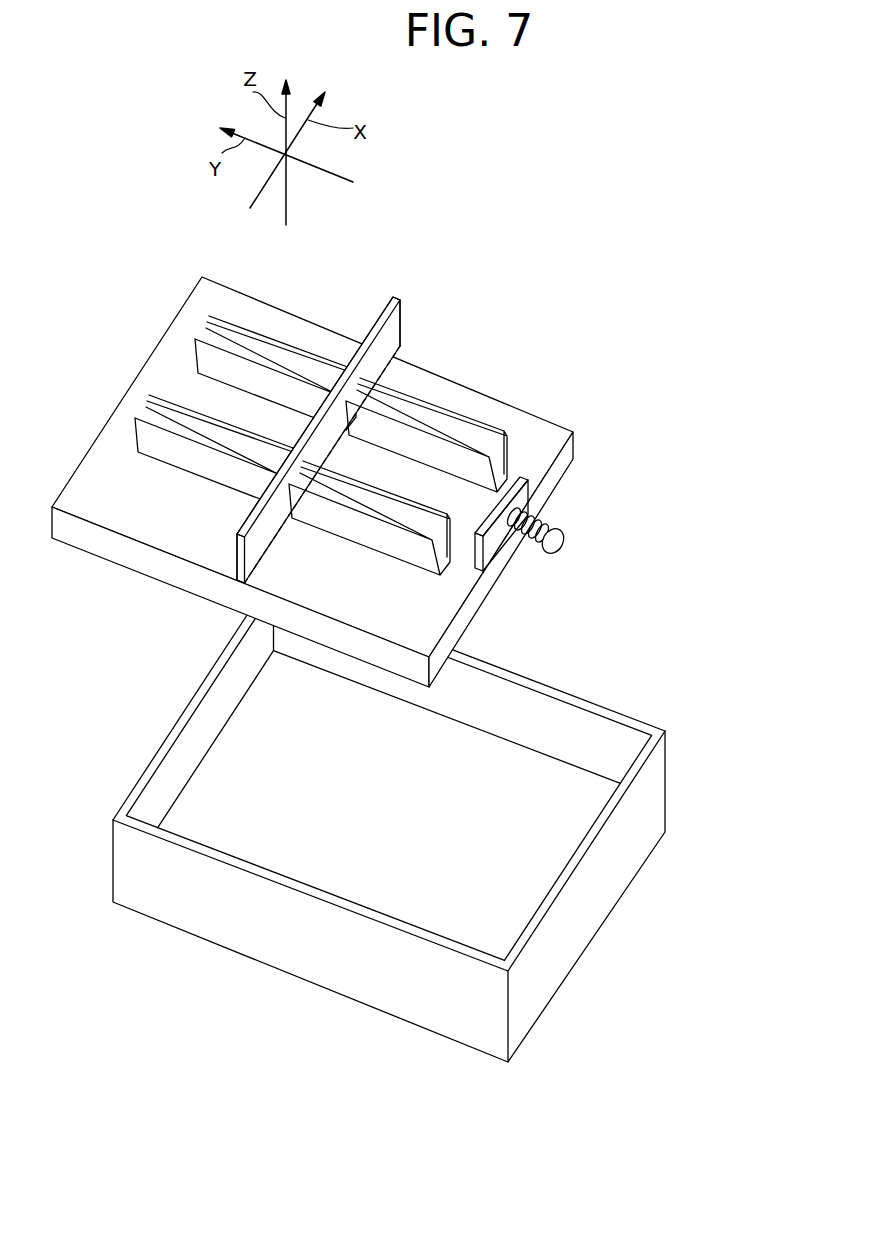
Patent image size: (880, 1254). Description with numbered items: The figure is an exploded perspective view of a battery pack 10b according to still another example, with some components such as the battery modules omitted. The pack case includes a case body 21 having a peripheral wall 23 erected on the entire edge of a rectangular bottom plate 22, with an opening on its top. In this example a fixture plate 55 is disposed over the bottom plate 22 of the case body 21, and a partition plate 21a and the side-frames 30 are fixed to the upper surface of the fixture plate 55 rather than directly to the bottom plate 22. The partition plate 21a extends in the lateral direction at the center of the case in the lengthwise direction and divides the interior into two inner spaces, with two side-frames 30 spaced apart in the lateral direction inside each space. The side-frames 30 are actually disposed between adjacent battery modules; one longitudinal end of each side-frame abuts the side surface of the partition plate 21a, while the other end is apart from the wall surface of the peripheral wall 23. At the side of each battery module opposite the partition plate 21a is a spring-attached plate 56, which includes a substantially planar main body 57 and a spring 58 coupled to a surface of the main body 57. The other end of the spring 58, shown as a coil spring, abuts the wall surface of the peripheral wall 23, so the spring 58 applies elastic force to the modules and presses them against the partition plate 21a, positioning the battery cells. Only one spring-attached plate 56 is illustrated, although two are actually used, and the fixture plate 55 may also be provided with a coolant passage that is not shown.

The battery pack 10b is at (519, 322).
The case body 21 is at (429, 821).
The partition plate 21a is at (378, 306).
The bottom plate 22 is at (540, 860).
The peripheral wall 23 is at (652, 812).
The side-frames 30 is at (321, 411).
The fixture plate 55 is at (565, 468).
The spring-attached plate 56 is at (497, 540).
The main body 57 is at (518, 497).
The spring 58 is at (563, 543).